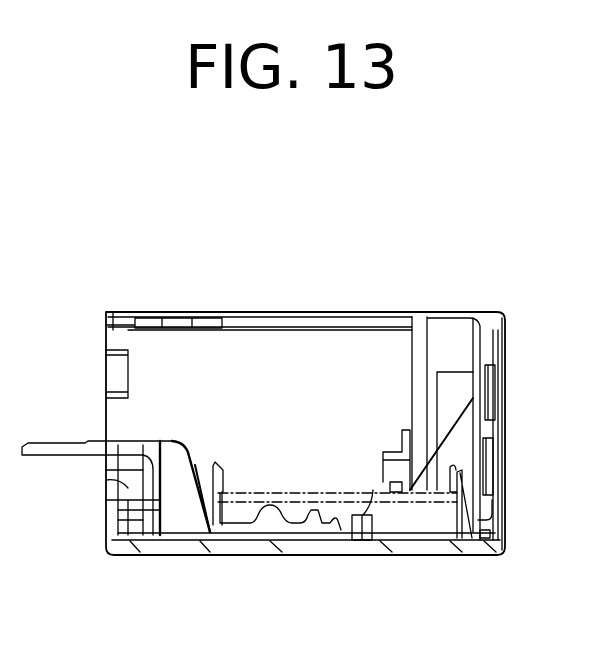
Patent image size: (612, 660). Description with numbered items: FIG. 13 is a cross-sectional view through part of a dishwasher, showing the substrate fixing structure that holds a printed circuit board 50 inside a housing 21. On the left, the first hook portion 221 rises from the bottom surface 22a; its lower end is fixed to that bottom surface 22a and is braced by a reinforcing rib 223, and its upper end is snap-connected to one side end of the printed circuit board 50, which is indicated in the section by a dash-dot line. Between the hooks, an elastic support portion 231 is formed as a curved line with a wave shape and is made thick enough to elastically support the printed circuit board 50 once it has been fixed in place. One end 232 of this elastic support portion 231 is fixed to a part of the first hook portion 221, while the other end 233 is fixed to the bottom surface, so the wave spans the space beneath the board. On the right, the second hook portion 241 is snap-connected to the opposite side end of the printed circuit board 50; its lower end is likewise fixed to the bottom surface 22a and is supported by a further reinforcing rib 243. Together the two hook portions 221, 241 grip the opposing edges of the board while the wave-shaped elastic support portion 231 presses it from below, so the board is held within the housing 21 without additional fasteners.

The housing 21 is at (505, 346).
The bottom surface 22a is at (428, 530).
The printed circuit board 50 is at (341, 535).
The first hook portion 221 is at (215, 472).
The reinforcing rib 223 is at (212, 505).
The elastic support portion 231 is at (265, 530).
The one end of the elastic support portion 232 is at (222, 532).
The other end of the elastic support portion 233 is at (337, 530).
The second hook portion 241 is at (460, 457).
The reinforcing rib 243 is at (462, 527).